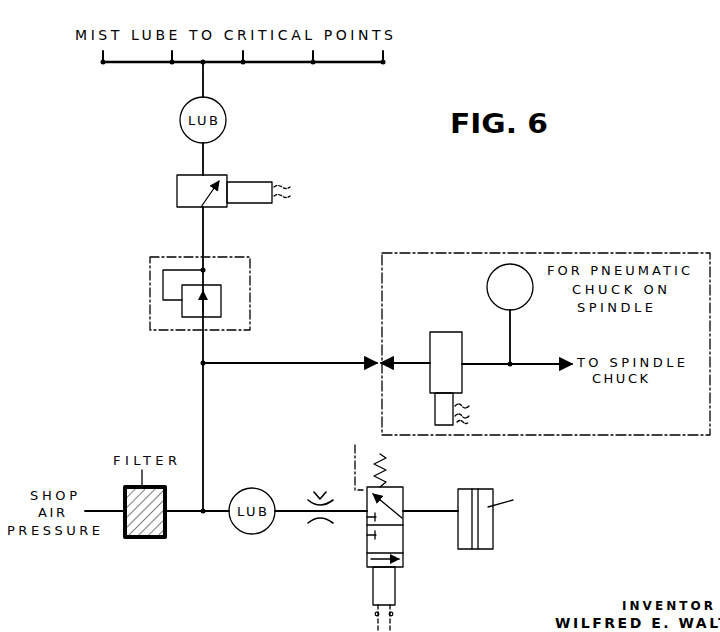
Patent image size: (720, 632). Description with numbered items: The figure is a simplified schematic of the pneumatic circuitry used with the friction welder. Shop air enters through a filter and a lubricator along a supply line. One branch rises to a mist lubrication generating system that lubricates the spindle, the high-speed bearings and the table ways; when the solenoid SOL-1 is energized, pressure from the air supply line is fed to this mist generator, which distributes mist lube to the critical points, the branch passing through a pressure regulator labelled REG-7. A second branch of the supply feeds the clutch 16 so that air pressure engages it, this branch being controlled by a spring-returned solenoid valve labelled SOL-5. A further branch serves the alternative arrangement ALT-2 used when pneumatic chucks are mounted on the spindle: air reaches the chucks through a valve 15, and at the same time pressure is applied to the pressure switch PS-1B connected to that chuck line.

The solenoid SOL- 1 is at (242, 182).
The pressure regulator REG. 7 is at (150, 290).
The pneumatic chuck alternative ALT- 2 is at (546, 335).
The pressure switch PS- 1B is at (510, 287).
The valve 15 is at (458, 380).
The solenoid valve SOL. 5 (clutch control) 5 is at (397, 592).
The clutch 16 is at (468, 549).